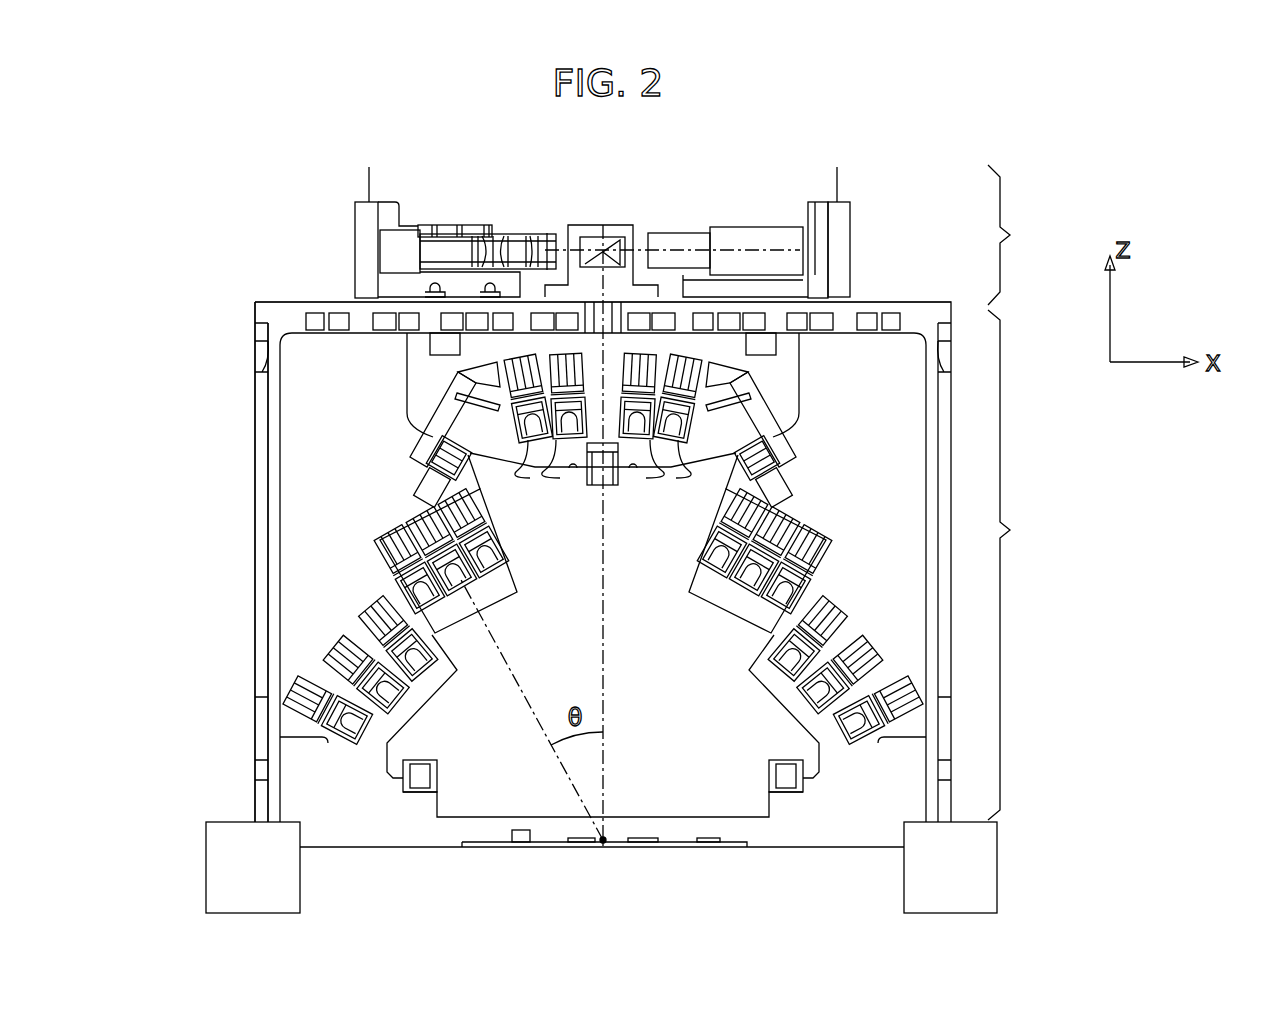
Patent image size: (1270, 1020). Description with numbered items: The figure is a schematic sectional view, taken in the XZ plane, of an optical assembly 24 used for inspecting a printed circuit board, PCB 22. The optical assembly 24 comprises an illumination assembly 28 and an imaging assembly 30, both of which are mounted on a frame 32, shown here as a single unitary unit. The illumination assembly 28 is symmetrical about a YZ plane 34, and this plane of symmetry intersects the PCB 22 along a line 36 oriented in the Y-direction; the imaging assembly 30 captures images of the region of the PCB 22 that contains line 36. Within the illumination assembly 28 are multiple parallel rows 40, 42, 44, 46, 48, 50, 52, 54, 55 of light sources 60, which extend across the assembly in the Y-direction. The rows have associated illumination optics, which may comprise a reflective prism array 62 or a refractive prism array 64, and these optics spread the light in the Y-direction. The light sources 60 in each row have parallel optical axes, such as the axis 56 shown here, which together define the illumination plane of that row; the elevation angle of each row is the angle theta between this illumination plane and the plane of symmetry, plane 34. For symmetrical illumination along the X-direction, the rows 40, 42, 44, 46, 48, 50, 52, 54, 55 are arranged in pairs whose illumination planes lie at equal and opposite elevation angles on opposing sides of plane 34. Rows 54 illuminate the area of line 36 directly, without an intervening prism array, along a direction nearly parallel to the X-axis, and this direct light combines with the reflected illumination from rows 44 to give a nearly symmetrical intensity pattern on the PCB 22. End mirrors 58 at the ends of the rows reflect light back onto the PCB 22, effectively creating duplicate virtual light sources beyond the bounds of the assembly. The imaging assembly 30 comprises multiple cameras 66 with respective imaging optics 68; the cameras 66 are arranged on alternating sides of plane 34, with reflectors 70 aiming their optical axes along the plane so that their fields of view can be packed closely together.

The PCB 22 is at (742, 838).
The optical assembly 24 is at (285, 235).
The illumination assembly 28 is at (1017, 565).
The imaging assembly 30 is at (1017, 235).
The frame 32 is at (262, 388).
The YZ plane 34 is at (605, 684).
The line 36 is at (602, 846).
The row 40 is at (578, 368).
The row 42 is at (522, 370).
The row 44 is at (427, 473).
The row 46 is at (488, 502).
The row 48 is at (412, 520).
The row 50 is at (392, 566).
The row 52 is at (374, 625).
The row 54 is at (338, 670).
The row 55 is at (912, 694).
The axis 56 is at (527, 702).
The end mirrors 58 is at (641, 658).
The light sources 60 is at (603, 468).
The reflective prism array 62 is at (503, 405).
The refractive prism array 64 is at (458, 578).
The cameras 66 is at (360, 204).
The imaging optics 68 is at (508, 233).
The reflectors 70 is at (600, 242).